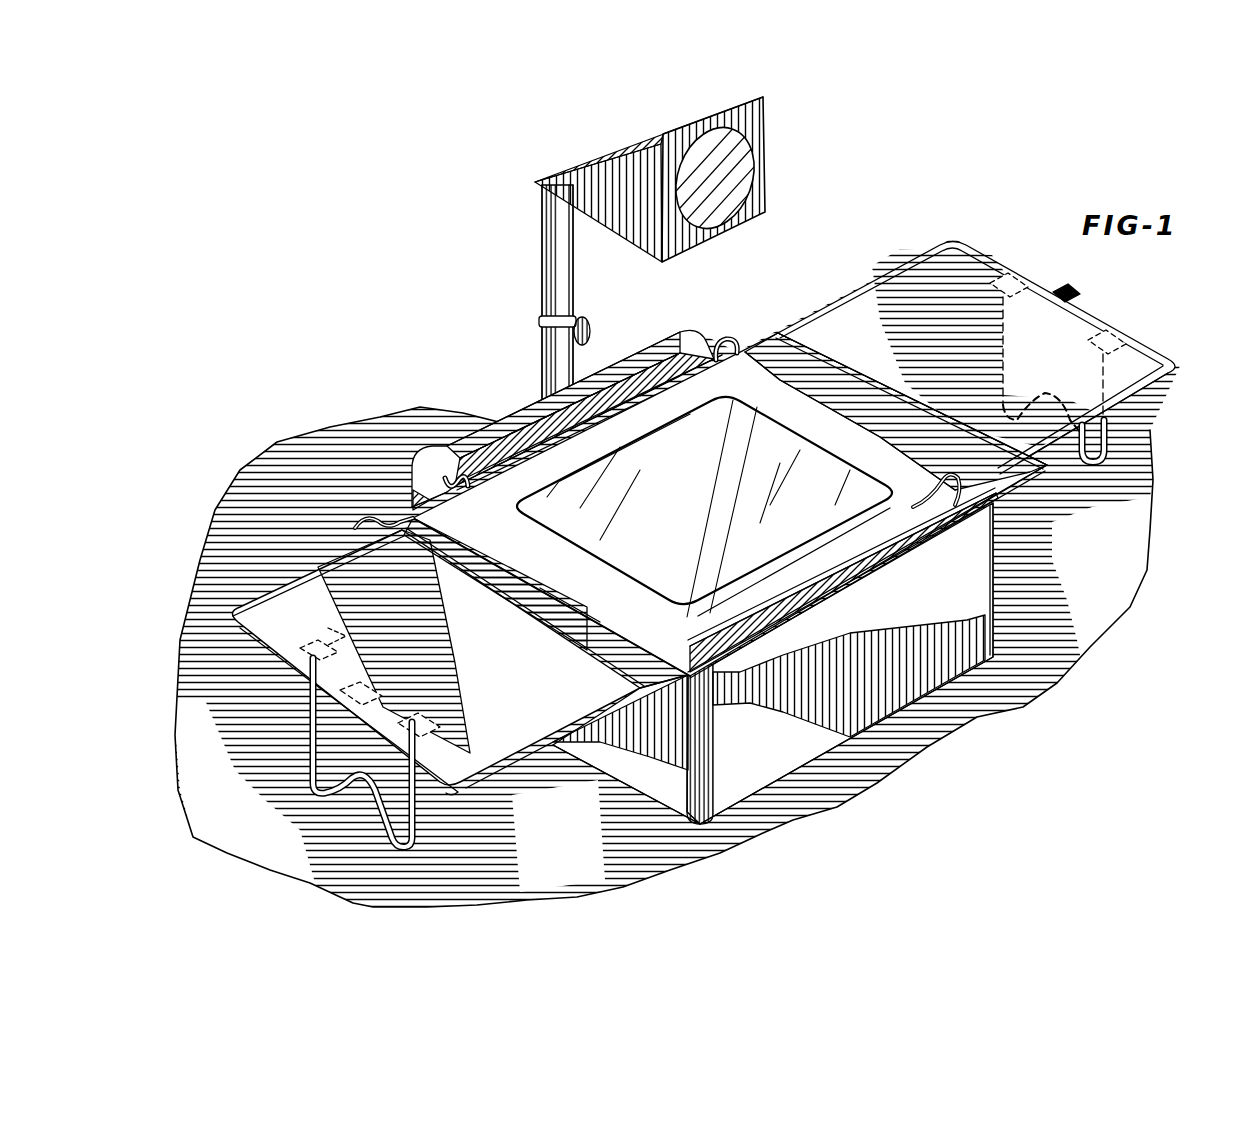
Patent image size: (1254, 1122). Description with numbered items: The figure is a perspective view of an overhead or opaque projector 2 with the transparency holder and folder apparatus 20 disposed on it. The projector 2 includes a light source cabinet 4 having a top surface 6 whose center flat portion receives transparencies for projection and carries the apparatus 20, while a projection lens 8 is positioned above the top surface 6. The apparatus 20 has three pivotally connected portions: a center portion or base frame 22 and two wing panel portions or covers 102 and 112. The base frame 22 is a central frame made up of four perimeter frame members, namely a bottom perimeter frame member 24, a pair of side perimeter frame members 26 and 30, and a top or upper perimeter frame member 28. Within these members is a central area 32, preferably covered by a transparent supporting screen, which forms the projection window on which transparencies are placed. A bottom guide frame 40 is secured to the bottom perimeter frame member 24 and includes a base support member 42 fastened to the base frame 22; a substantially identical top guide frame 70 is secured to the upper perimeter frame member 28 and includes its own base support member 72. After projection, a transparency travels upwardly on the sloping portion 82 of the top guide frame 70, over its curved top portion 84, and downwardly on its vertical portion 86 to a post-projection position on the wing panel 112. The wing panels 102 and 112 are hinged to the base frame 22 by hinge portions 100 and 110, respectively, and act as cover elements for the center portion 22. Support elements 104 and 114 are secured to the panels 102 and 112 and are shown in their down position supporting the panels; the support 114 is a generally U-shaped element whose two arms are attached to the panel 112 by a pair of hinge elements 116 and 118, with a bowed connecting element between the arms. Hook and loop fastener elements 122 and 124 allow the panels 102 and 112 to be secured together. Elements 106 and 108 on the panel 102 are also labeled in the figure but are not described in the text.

The overhead or opaque projector 2 is at (704, 330).
The light source cabinet 4 is at (640, 772).
The top surface 6 is at (624, 378).
The projection lens 8 is at (766, 195).
The transparency holder and folder apparatus 20 is at (778, 326).
The center portion or base frame 22 is at (782, 625).
The bottom perimeter frame member 24 is at (762, 582).
The side perimeter frame member 26 is at (855, 455).
The top or upper perimeter frame member 28 is at (585, 458).
The side perimeter frame member 30 is at (605, 580).
The central area 32 is at (717, 507).
The bottom guide frame 40 is at (820, 551).
The base support member 42 is at (905, 540).
The top guide frame 70 is at (655, 408).
The base support member 72 is at (530, 500).
The sloping portion 82 is at (474, 482).
The curved top portion 84 is at (432, 460).
The vertical portion 86 is at (410, 494).
The hinge portion 100 is at (968, 500).
The wing panel portion or cover 102 is at (900, 285).
The support element 104 is at (1100, 465).
The slot 106 is at (1120, 337).
The slot 108 is at (1020, 278).
The hinge portion 110 is at (353, 526).
The wing panel portion or cover 112 is at (285, 585).
The support element 114 is at (376, 841).
The hinge element 116 is at (432, 716).
The hinge element 118 is at (338, 651).
The hook and loop fastener element 122 is at (1075, 292).
The hook and loop fastener element 124 is at (370, 690).